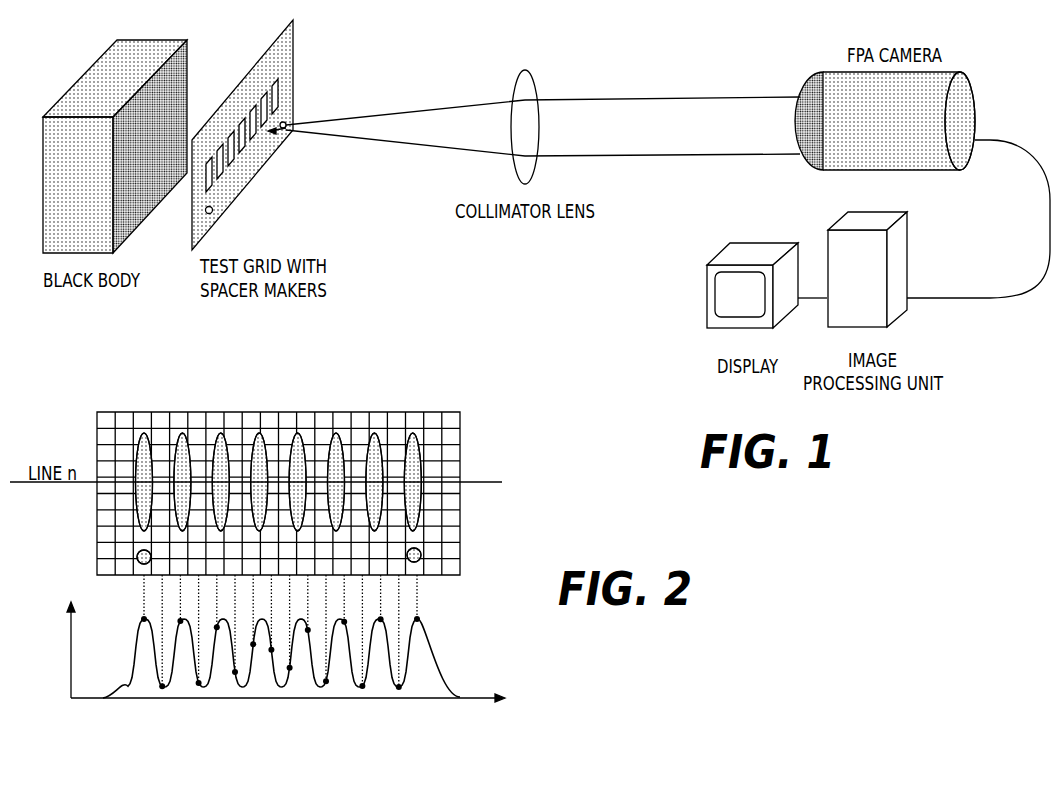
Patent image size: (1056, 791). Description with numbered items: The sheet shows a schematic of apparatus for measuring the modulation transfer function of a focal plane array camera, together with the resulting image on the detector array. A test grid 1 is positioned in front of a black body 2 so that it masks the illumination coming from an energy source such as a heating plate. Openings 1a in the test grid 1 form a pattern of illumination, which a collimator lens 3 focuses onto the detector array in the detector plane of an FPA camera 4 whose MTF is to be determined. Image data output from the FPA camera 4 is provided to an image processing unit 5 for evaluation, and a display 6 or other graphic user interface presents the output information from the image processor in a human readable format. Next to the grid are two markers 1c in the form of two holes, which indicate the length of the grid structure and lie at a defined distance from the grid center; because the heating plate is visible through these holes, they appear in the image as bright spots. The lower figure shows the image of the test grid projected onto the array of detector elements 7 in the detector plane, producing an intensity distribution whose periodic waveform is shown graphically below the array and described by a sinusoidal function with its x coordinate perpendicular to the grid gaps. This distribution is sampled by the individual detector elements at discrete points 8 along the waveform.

In FIG. 1, the test grid 1 is at (266, 135).
In FIG. 1, the openings 1a is at (280, 98).
In FIG. 2, the markers 1c is at (140, 561).
In FIG. 1, the black body 2 is at (108, 70).
In FIG. 1, the collimator lens 3 is at (537, 91).
In FIG. 1, the FPA camera 4 is at (820, 168).
In FIG. 1, the image processing unit 5 is at (863, 225).
In FIG. 1, the display 6 is at (719, 248).
In FIG. 2, the detector elements 7 is at (146, 408).
In FIG. 2, the discrete points 8 is at (140, 618).